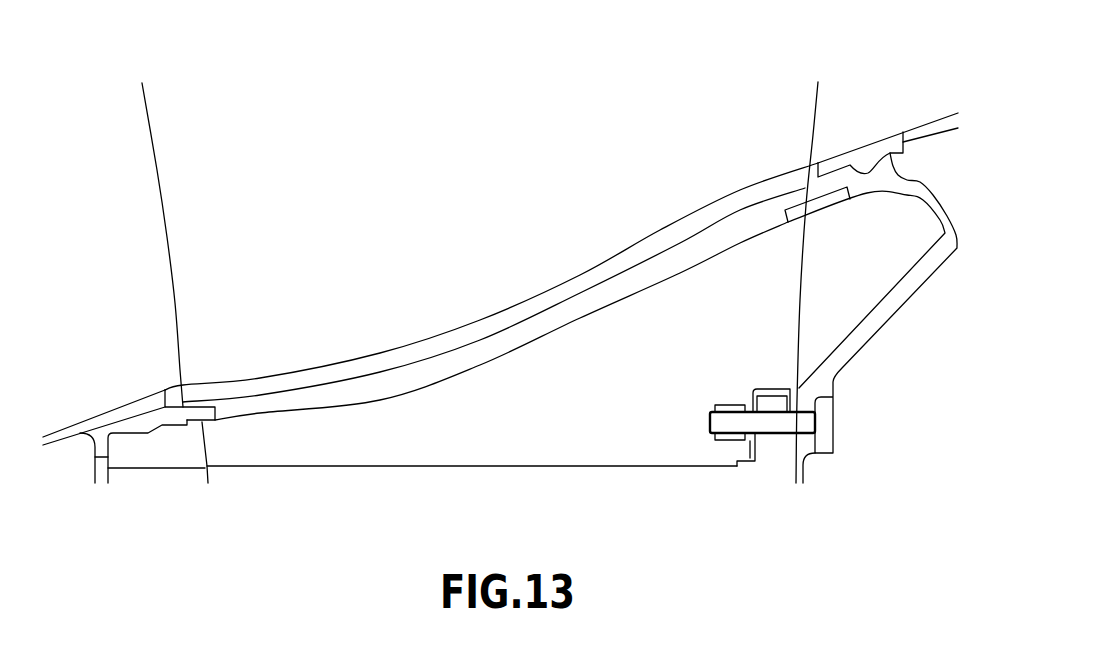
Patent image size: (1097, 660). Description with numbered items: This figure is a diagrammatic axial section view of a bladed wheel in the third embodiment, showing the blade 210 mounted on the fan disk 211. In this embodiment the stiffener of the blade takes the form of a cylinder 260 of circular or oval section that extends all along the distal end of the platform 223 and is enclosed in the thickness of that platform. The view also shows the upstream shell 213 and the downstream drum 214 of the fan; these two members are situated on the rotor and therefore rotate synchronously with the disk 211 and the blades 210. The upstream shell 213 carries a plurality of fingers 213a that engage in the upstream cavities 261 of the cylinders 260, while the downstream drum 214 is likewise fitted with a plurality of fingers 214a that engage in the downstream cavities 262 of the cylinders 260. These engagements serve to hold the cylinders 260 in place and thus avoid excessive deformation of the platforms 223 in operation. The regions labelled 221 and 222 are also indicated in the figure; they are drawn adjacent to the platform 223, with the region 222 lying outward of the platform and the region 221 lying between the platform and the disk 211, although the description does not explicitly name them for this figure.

The blade 210 is at (824, 83).
The fan disk 211 is at (460, 501).
The upstream shell 213 is at (62, 432).
The fingers 213a is at (200, 413).
The downstream drum 214 is at (933, 205).
The fingers 214a is at (820, 208).
The inner flow region 221 is at (595, 403).
The blade 222 is at (460, 188).
The platform 223 is at (522, 305).
The cylinder 260 is at (666, 297).
The upstream cavities 261 is at (179, 427).
The downstream cavities 262 is at (776, 233).